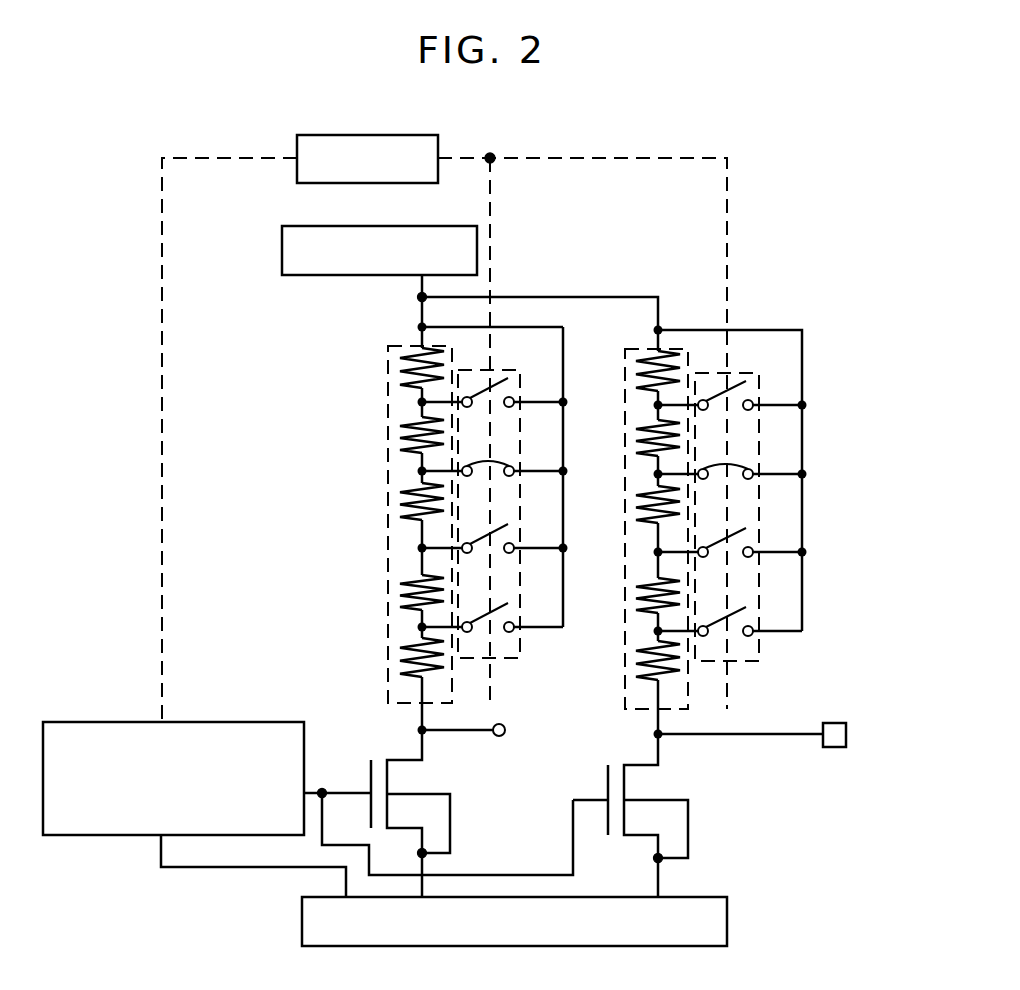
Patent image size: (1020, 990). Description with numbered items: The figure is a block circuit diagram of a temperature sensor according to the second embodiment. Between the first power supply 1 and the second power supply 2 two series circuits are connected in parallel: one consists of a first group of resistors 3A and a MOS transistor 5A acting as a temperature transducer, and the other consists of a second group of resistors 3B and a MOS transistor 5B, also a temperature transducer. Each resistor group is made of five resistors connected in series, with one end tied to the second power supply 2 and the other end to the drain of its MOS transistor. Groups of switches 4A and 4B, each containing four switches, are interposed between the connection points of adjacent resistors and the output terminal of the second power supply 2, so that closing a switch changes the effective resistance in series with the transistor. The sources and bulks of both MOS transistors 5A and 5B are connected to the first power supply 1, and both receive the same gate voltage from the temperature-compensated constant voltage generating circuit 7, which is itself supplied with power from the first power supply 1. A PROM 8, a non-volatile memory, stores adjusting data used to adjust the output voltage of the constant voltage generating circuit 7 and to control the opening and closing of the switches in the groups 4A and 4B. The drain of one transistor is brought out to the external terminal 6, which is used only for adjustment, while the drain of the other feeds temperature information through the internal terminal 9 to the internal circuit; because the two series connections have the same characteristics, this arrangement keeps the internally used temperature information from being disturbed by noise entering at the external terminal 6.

The first power supply 1 is at (727, 910).
The second power supply 2 is at (282, 262).
The first group of resistors 3A is at (388, 378).
The second group of resistors 3B is at (640, 348).
The group of switches 4A is at (520, 646).
The group of switches 4B is at (759, 652).
The MOS transistor 5A is at (463, 810).
The MOS transistor 5B is at (702, 818).
The external terminal 6 is at (838, 723).
The temperature-compensated constant voltage generating circuit 7 is at (227, 722).
The PROM 8 is at (438, 141).
The internal terminal 9 is at (505, 733).